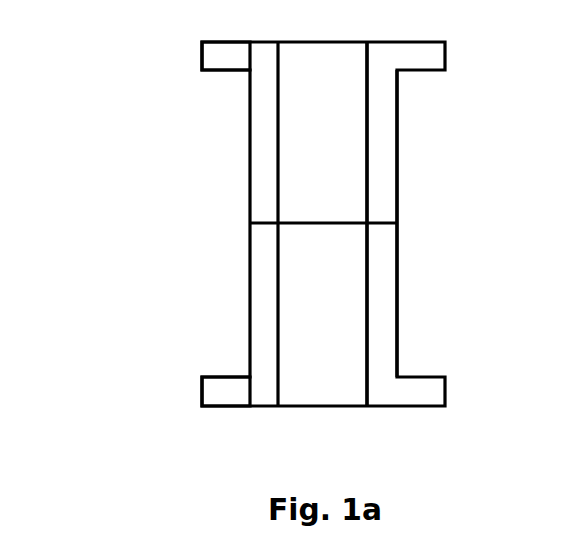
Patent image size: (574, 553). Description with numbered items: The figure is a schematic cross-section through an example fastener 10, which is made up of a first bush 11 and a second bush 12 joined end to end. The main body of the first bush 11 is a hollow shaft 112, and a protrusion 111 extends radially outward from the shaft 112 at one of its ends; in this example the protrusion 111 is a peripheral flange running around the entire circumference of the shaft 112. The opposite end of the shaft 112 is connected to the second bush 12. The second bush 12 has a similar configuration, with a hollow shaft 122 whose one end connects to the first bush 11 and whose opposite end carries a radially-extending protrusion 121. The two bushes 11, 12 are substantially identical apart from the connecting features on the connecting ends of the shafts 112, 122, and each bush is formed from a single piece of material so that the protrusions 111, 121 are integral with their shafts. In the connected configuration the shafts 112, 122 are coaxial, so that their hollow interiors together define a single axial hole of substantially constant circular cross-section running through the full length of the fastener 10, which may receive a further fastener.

The fastener 10 is at (106, 154).
The first bush 11 is at (336, 148).
The second bush 12 is at (335, 316).
The protrusion 111 is at (213, 57).
The hollow shaft 112 is at (385, 125).
The protrusion 121 is at (210, 391).
The hollow shaft 122 is at (393, 307).